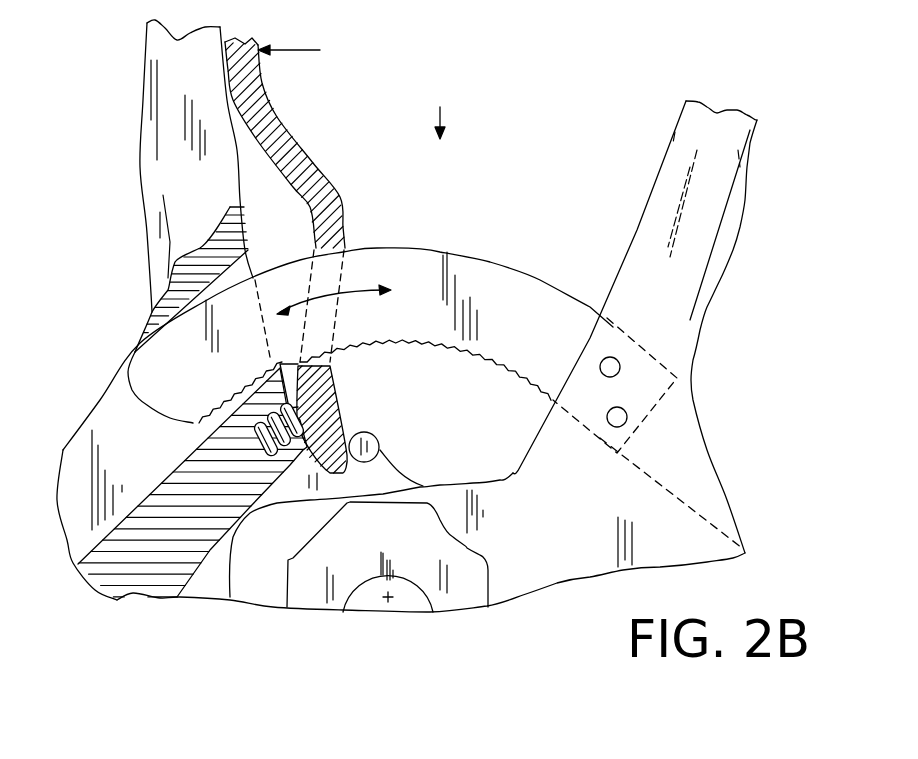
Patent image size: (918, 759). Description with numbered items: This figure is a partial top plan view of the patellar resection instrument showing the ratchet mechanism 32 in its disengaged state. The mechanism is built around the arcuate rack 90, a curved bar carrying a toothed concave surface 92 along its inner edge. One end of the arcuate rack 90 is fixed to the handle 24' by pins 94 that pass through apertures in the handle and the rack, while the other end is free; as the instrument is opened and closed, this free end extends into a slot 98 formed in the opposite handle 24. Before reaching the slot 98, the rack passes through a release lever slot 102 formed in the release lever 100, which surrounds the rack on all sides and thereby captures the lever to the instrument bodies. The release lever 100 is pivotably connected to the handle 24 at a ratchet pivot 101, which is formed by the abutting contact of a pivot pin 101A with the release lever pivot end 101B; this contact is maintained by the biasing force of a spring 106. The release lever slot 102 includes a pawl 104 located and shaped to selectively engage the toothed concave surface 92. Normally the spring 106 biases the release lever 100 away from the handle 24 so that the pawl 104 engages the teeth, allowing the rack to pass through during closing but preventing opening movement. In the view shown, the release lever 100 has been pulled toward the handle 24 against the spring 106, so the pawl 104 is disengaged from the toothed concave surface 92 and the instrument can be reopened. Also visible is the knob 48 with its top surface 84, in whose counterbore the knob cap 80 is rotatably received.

The handle 24 is at (169, 188).
The handle 24' is at (635, 317).
The ratchet mechanism 32 is at (434, 110).
The knob 48 is at (465, 544).
The knob cap 80 is at (367, 597).
The top surface 84 is at (457, 597).
The arcuate rack 90 is at (515, 283).
The toothed concave surface 92 is at (410, 344).
The pins 94 is at (627, 417).
The slot 98 is at (117, 413).
The release lever 100 is at (277, 117).
The ratchet pivot 101 is at (340, 471).
The pivot pin 101A is at (378, 443).
The release lever pivot end 101B is at (347, 460).
The release lever slot 102 is at (327, 243).
The pawl 104 is at (292, 364).
The spring 106 is at (327, 393).